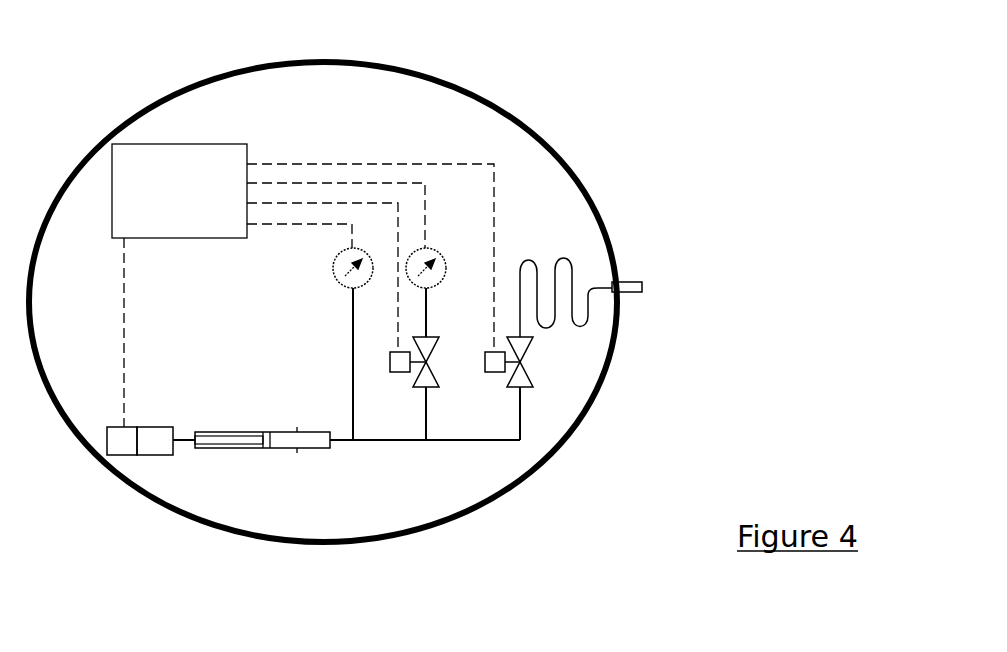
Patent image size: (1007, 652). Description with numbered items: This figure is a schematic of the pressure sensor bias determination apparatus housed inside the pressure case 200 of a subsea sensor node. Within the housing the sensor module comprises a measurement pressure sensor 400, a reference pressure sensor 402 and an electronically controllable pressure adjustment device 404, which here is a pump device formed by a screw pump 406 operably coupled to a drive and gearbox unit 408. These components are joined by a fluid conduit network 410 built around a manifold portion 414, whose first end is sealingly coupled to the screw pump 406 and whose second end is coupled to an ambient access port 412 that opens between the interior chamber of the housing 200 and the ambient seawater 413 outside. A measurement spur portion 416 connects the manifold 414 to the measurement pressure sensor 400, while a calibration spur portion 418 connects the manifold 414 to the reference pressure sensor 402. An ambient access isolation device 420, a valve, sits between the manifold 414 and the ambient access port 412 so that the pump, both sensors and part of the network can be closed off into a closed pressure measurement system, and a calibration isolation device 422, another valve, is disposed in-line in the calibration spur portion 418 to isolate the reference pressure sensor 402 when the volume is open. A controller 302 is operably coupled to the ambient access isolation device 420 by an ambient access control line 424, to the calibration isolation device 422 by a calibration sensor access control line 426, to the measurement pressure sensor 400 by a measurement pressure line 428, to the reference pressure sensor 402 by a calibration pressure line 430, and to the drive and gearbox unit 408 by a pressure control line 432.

The pressure case 200 is at (425, 78).
The controller 302 is at (199, 202).
The ambient seawater 413 is at (690, 151).
The ambient access control line 424 is at (363, 163).
The calibration pressure line 430 is at (400, 182).
The calibration sensor access control line 426 is at (352, 203).
The measurement pressure line 428 is at (295, 225).
The pressure control line 432 is at (124, 357).
The measurement pressure sensor 400 is at (340, 278).
The reference pressure sensor 402 is at (437, 253).
The measurement spur portion 416 is at (352, 403).
The calibration isolation device 422 is at (432, 375).
The calibration spur portion 418 is at (425, 425).
The ambient access isolation device 420 is at (536, 365).
The ambient access port 412 is at (632, 282).
The manifold portion 414 is at (378, 440).
The fluid conduit network 410 is at (500, 452).
The drive and gearbox unit 408 is at (143, 455).
The screw pump 406 is at (320, 448).
The pressure adjustment device 404 is at (285, 512).